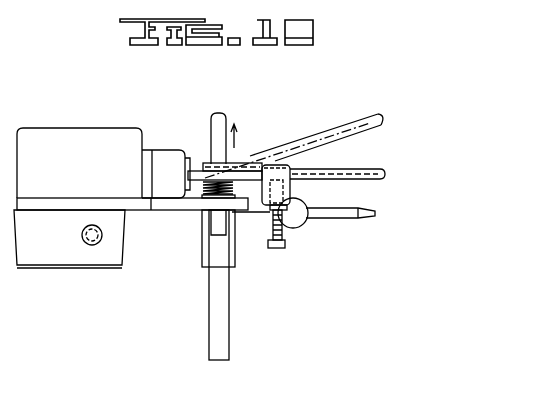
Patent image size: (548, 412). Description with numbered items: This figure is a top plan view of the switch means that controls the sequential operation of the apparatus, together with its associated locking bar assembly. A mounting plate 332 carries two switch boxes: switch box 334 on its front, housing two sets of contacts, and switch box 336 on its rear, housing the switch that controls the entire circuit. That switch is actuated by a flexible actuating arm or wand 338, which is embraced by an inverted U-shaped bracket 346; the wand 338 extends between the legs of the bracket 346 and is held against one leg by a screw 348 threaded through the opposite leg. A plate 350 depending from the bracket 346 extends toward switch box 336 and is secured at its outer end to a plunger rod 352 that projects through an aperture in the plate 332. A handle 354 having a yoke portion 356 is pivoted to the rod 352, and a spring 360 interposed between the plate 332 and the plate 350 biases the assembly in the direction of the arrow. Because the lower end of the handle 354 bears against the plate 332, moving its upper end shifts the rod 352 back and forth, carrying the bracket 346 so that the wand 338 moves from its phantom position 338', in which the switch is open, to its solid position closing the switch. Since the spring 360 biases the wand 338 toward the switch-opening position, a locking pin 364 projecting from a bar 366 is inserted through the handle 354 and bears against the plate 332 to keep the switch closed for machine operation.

The mounting plate 332 is at (152, 203).
The switch box 334 is at (68, 257).
The switch box 336 is at (58, 142).
The flexible actuating arm or wand 338 is at (287, 161).
The wand phantom position 338' is at (302, 131).
The bracket 346 is at (288, 188).
The screw 348 is at (283, 241).
The plate 350 is at (250, 164).
The plunger rod 352 is at (213, 142).
The handle 354 is at (221, 305).
The yoke portion 356 is at (207, 256).
The spring 360 is at (202, 196).
The locking pin 364 is at (255, 212).
The bar 366 is at (296, 222).